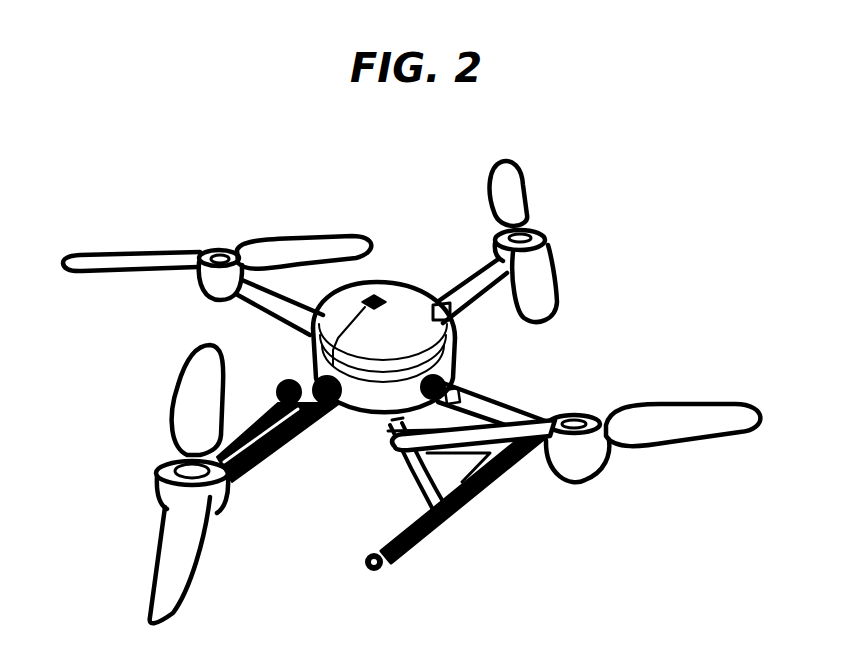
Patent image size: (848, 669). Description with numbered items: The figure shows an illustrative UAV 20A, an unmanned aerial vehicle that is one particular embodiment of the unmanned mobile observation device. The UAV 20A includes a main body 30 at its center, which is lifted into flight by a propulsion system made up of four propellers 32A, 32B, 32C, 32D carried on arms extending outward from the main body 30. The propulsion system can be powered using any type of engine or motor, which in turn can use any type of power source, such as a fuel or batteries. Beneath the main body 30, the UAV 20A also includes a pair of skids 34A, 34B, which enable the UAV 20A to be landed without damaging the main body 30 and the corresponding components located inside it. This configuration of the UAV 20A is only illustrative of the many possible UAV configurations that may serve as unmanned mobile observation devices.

The UAV 20A is at (128, 172).
The main body 30 is at (386, 283).
The propeller 32A is at (219, 250).
The propeller 32B is at (537, 228).
The propeller 32C is at (573, 433).
The propeller 32D is at (160, 472).
The skid 34A is at (285, 388).
The skid 34B is at (415, 553).